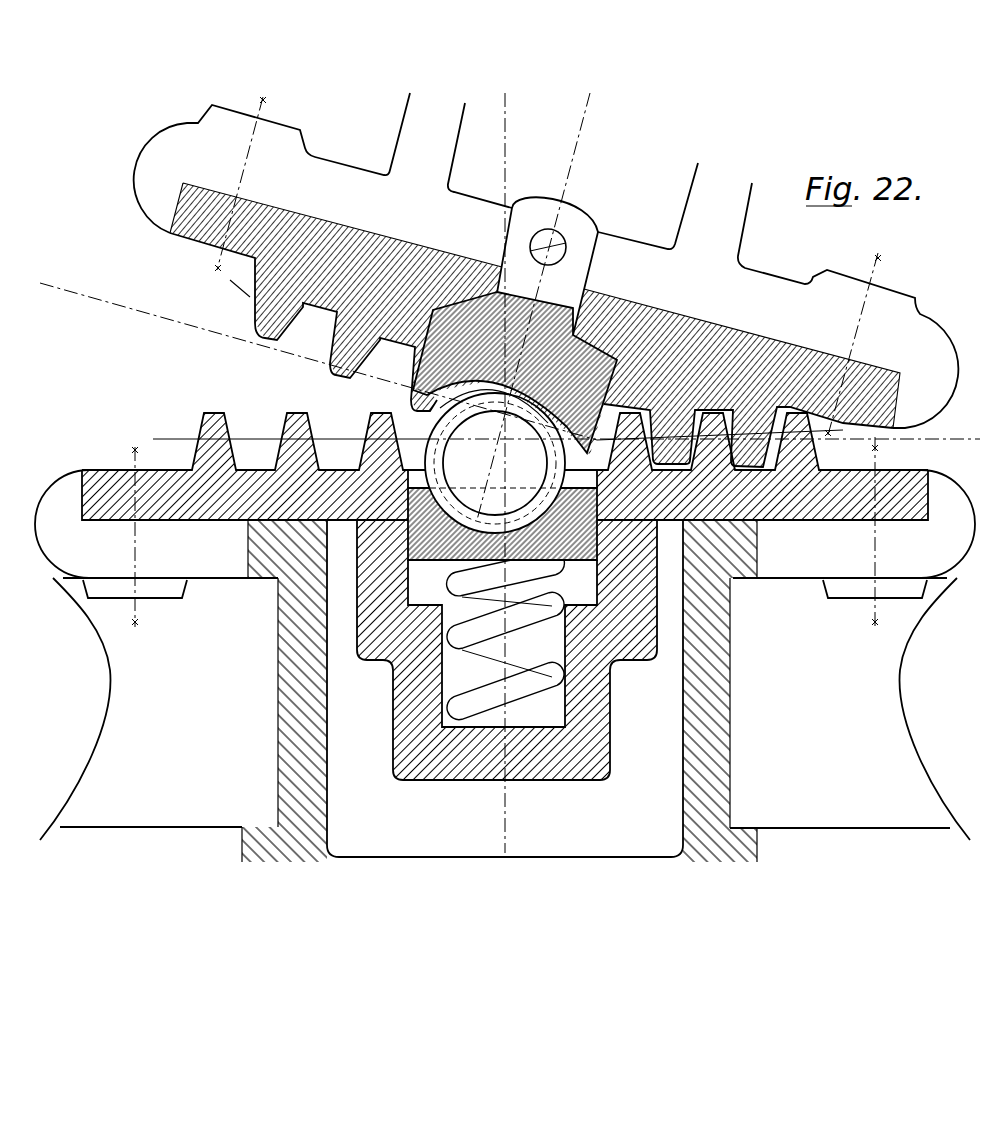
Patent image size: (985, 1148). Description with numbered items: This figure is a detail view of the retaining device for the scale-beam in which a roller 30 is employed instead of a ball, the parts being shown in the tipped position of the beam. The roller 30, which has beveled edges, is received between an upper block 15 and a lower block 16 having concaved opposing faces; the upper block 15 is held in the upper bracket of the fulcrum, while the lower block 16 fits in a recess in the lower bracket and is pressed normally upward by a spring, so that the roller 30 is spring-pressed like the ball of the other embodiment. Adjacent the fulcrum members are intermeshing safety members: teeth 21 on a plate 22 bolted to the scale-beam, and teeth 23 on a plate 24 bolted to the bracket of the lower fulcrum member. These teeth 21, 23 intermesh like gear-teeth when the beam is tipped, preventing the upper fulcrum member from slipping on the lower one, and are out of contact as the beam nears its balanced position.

The upper block 15 is at (587, 343).
The lower block 16 is at (408, 547).
The teeth 21 is at (276, 328).
The plate 22 is at (546, 280).
The teeth 23 is at (218, 427).
The plate 24 is at (128, 468).
The roller 30 is at (440, 425).